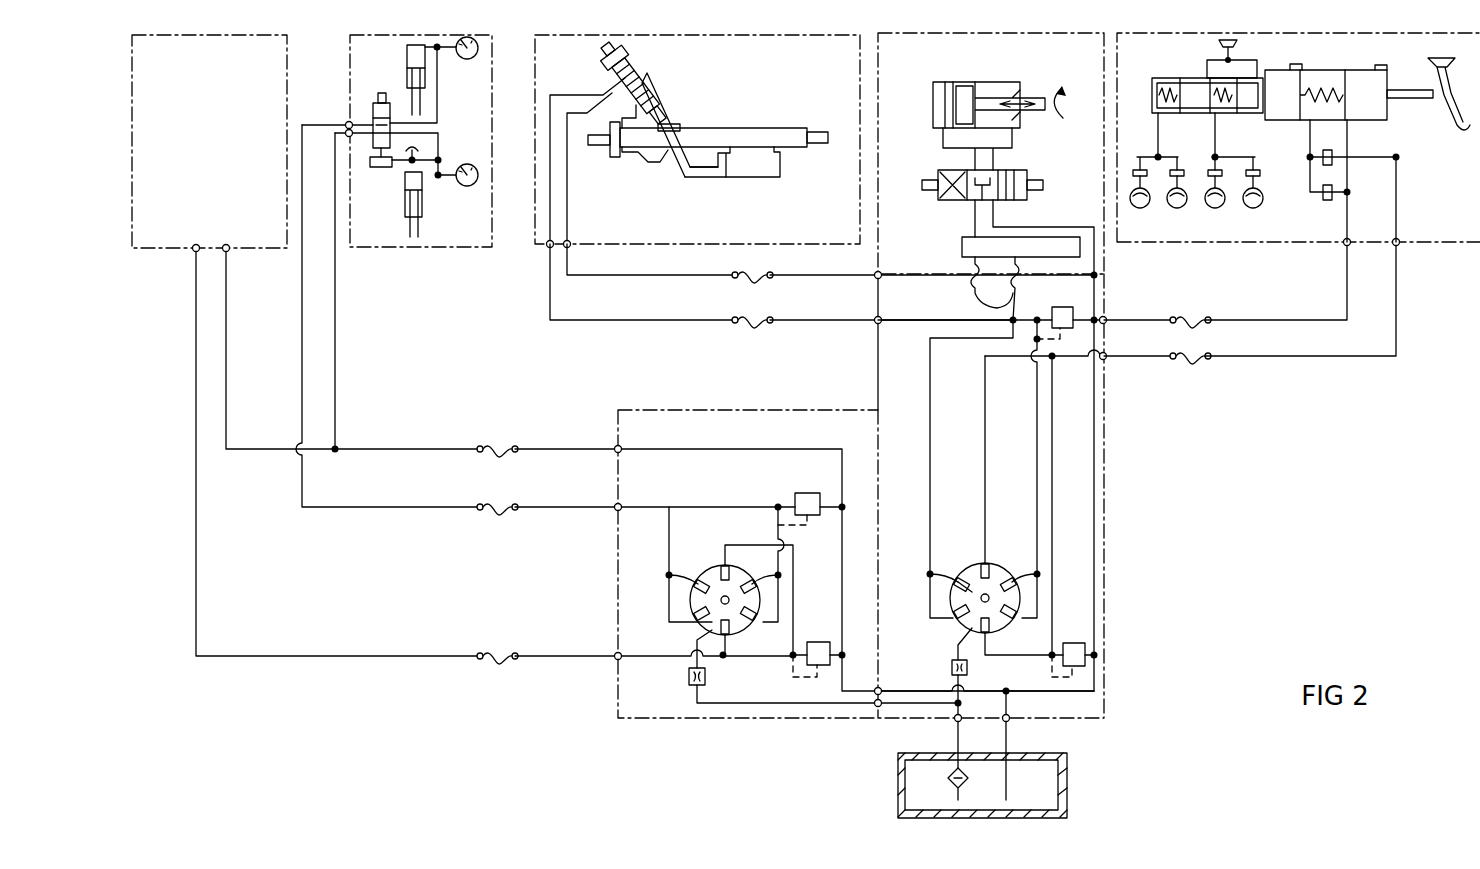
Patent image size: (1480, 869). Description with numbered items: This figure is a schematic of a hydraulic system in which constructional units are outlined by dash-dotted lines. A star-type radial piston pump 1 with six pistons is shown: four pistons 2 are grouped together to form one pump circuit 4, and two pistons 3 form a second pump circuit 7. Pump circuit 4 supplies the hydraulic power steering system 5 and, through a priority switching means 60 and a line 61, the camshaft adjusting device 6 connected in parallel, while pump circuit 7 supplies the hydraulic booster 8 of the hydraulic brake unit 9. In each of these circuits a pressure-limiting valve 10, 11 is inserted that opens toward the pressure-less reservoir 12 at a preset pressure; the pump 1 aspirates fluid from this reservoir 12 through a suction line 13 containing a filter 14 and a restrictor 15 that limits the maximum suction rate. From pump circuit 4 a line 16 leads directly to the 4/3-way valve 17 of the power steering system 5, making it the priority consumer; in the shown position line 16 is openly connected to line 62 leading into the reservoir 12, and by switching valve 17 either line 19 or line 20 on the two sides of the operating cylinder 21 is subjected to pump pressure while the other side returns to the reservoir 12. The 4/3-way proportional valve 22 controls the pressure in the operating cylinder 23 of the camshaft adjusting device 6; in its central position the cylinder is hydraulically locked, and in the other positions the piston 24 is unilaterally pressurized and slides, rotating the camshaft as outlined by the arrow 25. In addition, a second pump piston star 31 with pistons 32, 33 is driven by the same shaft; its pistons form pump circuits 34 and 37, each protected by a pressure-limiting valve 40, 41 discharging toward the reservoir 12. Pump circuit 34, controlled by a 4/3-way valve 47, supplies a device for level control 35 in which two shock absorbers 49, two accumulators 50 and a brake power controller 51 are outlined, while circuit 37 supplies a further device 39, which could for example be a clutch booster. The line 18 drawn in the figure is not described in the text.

The radial piston pump 1 is at (958, 558).
The pistons 2 is at (958, 614).
The pistons 3 is at (993, 568).
The pump circuit 4 is at (828, 322).
The hydraulic power steering system 5 is at (652, 180).
The camshaft adjusting device 6 is at (934, 68).
The pump circuit 7 is at (1158, 358).
The hydraulic booster 8 is at (1372, 60).
The hydraulic brake unit 9 is at (1286, 168).
The pressure-limiting valve 10 is at (1062, 307).
The pressure-limiting valve 11 is at (1073, 643).
The reservoir 12 is at (1068, 790).
The suction line 13 is at (956, 740).
The filter 14 is at (947, 778).
The restrictor 15 is at (952, 668).
The line 16 is at (549, 312).
The 4/3-way valve 17 is at (637, 70).
The steering supply conduit 18 is at (668, 277).
The line 19 is at (768, 177).
The line 20 is at (710, 168).
The operating cylinder 21 is at (752, 128).
The 4/3-way proportional valve 22 is at (950, 200).
The operating cylinder 23 is at (993, 82).
The piston 24 is at (962, 102).
The arrow 25 is at (1060, 92).
The second pump piston star 31 is at (688, 552).
The pistons 32 is at (699, 616).
The pistons 33 is at (723, 563).
The pump circuit 34 is at (410, 510).
The device for level control 35 is at (370, 66).
The pump circuit 37 is at (433, 660).
The further device 39 is at (192, 157).
The pressure-limiting valve 40 is at (808, 492).
The pressure-limiting valve 41 is at (818, 642).
The 4/3-way valve 47 is at (372, 112).
The shock absorbers 49 is at (420, 205).
The accumulators 50 is at (467, 186).
The brake power controller 51 is at (381, 167).
The priority switching means 60 is at (1052, 236).
The line 61 is at (995, 296).
The line 62 is at (1106, 310).